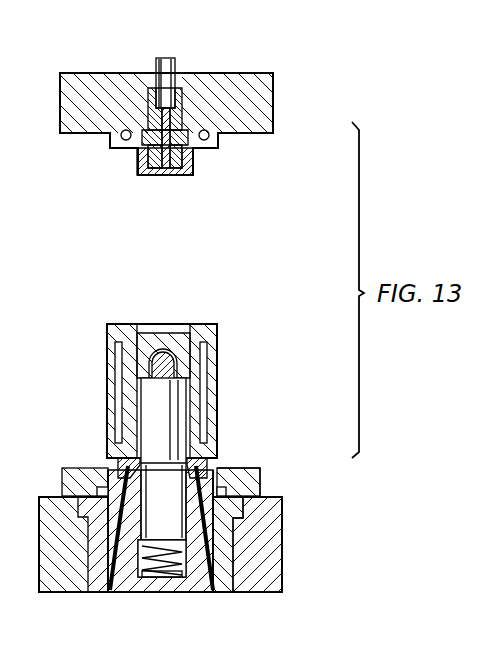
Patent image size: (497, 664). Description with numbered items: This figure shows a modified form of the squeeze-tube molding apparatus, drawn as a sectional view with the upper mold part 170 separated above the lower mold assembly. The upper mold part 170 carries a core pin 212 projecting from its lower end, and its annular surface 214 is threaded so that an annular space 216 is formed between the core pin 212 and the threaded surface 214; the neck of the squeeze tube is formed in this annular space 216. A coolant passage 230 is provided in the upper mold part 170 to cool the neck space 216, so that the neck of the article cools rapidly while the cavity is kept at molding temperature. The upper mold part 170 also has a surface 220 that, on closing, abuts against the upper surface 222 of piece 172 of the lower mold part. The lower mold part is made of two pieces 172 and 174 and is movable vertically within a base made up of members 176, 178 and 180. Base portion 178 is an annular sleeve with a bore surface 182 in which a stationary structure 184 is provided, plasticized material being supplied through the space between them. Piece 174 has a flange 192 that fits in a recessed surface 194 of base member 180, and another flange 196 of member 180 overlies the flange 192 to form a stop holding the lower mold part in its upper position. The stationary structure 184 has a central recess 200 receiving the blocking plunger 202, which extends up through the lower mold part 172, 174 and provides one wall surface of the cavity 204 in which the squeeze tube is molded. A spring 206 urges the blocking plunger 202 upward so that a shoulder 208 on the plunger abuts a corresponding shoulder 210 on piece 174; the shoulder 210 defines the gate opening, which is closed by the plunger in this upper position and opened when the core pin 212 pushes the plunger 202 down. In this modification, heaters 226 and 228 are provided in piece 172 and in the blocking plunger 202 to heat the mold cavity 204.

The upper mold part 170 is at (274, 97).
The core pin 212 is at (157, 60).
The annular space 216 is at (143, 152).
The coolant passage 230 is at (210, 139).
The surface 220 is at (208, 151).
The annular surface 214 is at (193, 172).
The upper surface 222 is at (117, 324).
The lower mold part piece 172 is at (207, 383).
The heater 226 is at (205, 402).
The heater 228 is at (172, 372).
The cavity 204 is at (138, 386).
The blocking plunger 202 is at (152, 406).
The lower mold part piece 174 is at (212, 468).
The shoulder 210 is at (116, 460).
The flange 196 is at (222, 470).
The shoulder 208 is at (108, 472).
The flange 192 is at (260, 470).
The base member 180 is at (262, 486).
The recessed surface 194 is at (233, 500).
The base portion 178 is at (240, 518).
The base member 176 is at (278, 572).
The stationary structure 184 is at (115, 583).
The bore surface 182 is at (215, 596).
The central recess 200 is at (146, 580).
The spring 206 is at (171, 574).